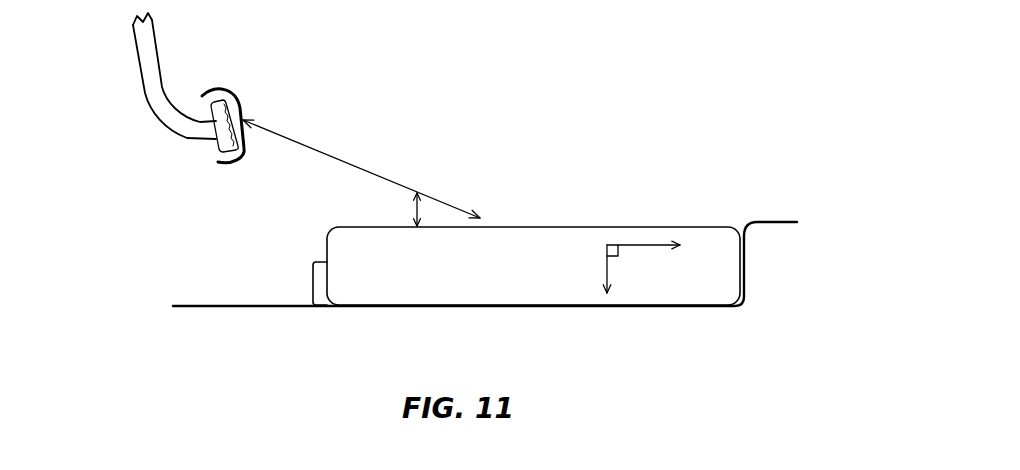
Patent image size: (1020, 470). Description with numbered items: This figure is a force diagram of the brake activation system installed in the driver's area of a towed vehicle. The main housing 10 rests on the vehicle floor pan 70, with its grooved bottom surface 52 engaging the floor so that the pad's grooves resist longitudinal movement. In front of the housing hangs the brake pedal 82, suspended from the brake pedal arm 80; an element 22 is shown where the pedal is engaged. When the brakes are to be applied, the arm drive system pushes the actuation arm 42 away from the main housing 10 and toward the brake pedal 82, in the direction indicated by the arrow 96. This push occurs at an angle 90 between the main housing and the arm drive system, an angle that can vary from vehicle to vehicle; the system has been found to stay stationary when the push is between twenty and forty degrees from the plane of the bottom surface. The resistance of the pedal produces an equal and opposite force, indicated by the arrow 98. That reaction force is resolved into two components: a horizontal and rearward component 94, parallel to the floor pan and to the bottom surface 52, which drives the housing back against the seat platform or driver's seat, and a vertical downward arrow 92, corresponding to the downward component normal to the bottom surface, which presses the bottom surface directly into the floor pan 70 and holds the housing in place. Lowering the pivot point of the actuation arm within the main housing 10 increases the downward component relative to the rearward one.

The main housing 10 is at (722, 226).
The connector 22 is at (205, 95).
The actuation arm 42 is at (348, 162).
The bottom surface 52 is at (347, 307).
The floor pan 70 is at (218, 306).
The brake pedal arm 80 is at (140, 58).
The brake pedal 82 is at (220, 147).
The angle 90 is at (417, 207).
The downward direction 92 is at (607, 270).
The horizontal and rearward component 94 is at (657, 246).
The arrow 96 is at (246, 106).
The arrow 98 is at (477, 214).